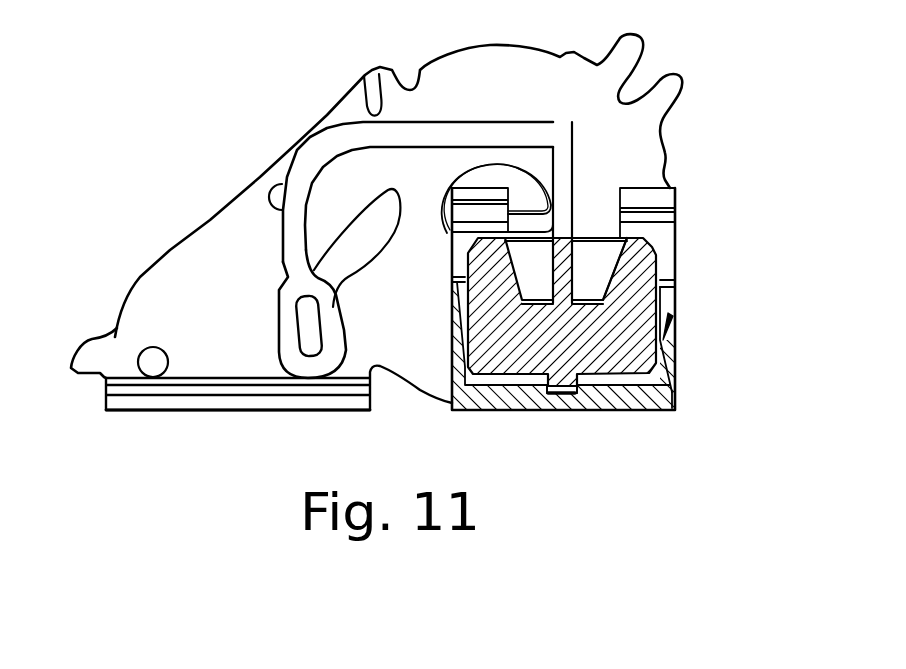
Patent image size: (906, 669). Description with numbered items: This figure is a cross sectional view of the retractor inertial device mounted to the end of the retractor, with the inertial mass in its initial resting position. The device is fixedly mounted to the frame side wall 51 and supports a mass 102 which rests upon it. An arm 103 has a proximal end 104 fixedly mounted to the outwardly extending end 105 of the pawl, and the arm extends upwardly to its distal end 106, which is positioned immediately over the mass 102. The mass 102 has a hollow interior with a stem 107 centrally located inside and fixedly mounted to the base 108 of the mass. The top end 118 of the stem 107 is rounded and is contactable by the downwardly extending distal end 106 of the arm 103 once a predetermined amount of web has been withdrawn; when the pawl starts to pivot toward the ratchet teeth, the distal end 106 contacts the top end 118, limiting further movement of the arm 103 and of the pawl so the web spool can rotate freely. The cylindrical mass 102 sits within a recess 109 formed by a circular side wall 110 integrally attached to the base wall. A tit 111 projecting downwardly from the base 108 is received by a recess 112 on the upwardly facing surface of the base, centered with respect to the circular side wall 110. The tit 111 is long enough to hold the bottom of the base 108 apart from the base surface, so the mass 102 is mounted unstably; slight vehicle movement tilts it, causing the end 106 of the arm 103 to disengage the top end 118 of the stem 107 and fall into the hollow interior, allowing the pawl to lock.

The side wall 51 is at (117, 328).
The mass 102 is at (680, 262).
The arm 103 is at (345, 122).
The proximal end 104 is at (277, 293).
The outwardly extending end 105 is at (313, 317).
The distal end 106 is at (567, 183).
The stem 107 is at (679, 250).
The base 108 is at (546, 354).
The recess 109 is at (678, 308).
The circular side wall 110 is at (676, 360).
The tit 111 is at (594, 410).
The recess 112 is at (544, 398).
The top end 118 is at (568, 238).